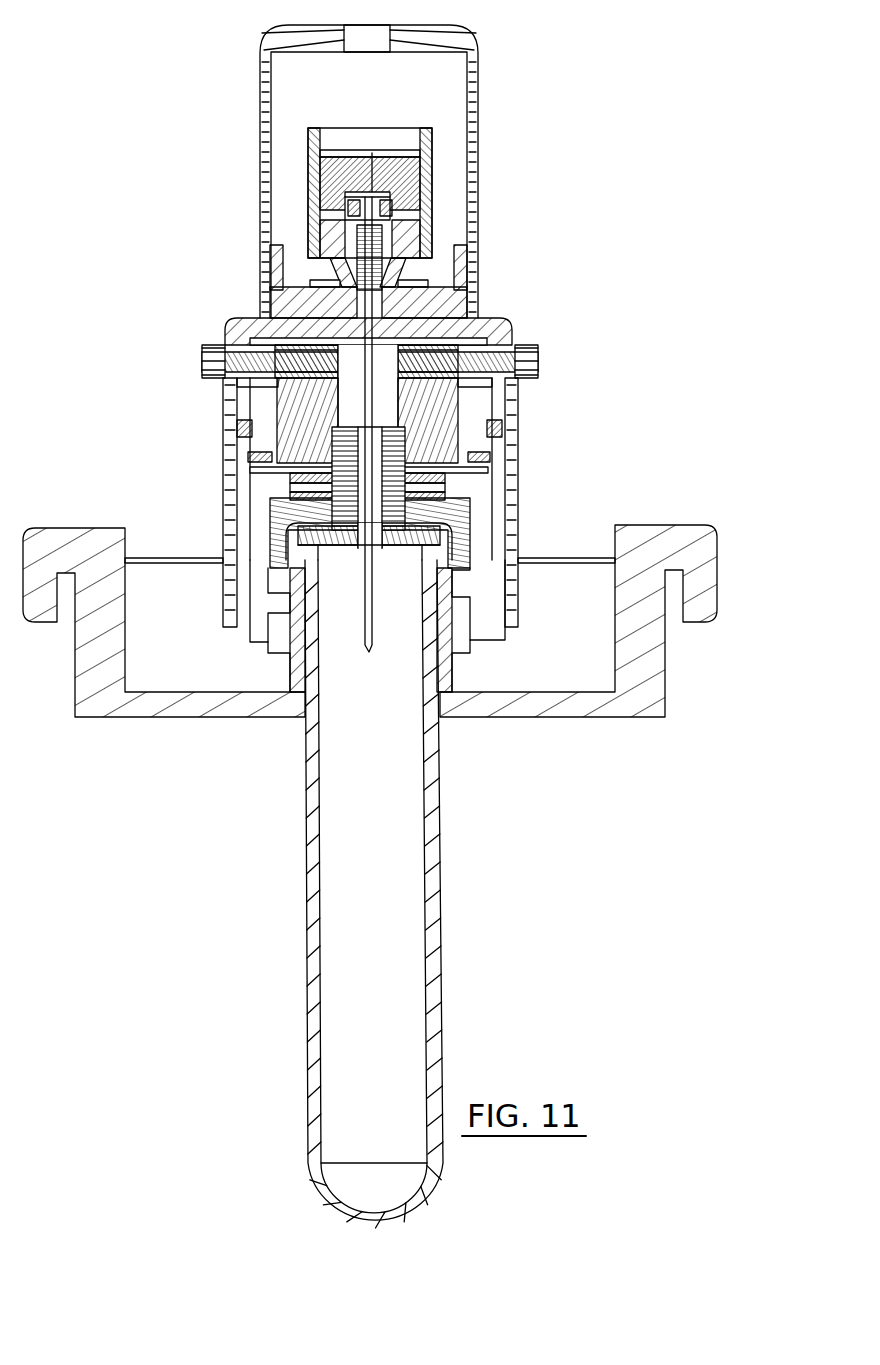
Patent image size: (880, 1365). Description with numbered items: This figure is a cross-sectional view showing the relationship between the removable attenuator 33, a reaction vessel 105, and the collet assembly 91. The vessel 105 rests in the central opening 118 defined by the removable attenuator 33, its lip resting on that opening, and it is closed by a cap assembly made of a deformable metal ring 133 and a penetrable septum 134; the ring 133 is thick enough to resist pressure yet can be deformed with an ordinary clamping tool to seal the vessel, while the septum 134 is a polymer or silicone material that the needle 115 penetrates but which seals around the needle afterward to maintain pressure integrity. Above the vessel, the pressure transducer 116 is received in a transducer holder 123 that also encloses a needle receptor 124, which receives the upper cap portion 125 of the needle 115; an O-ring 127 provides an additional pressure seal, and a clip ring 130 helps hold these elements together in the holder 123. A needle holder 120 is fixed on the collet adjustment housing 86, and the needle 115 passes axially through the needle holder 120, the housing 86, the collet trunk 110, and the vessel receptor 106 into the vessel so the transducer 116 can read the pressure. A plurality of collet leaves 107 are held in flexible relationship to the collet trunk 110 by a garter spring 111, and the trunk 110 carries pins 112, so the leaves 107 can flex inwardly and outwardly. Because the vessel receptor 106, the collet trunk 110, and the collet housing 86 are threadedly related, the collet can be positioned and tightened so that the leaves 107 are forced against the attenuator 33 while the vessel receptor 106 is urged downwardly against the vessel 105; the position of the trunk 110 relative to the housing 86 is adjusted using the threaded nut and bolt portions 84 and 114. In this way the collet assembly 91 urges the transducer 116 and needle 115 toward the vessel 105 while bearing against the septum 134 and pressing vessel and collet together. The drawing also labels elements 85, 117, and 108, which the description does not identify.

The collet assembly 91 is at (626, 110).
The cap 85 is at (479, 103).
The transducer holder 123 is at (310, 140).
The clip ring 130 is at (395, 152).
The pressure transducer 116 is at (330, 178).
The needle 117 is at (372, 153).
The O-ring 127 is at (385, 205).
The needle receptor 124 is at (328, 232).
The upper cap portion of the needle 125 is at (357, 248).
The needle holder 120 is at (462, 298).
The collet adjustment housing 86 is at (515, 327).
The threaded nut and bolt portion 84 is at (530, 378).
The collet trunk 110 is at (458, 405).
The threaded nut and bolt portion 114 is at (255, 383).
The garter spring 111 is at (240, 432).
The pins 112 is at (490, 458).
The vessel receptor 106 is at (275, 505).
The washer 108 is at (445, 488).
The deformable metal ring 133 is at (342, 548).
The penetrable septum 134 is at (396, 548).
The needle 115 is at (373, 650).
The reaction vessel 105 is at (438, 828).
The central opening 118 is at (318, 660).
The collet leaves 107 is at (490, 640).
The removable attenuator 33 is at (705, 558).